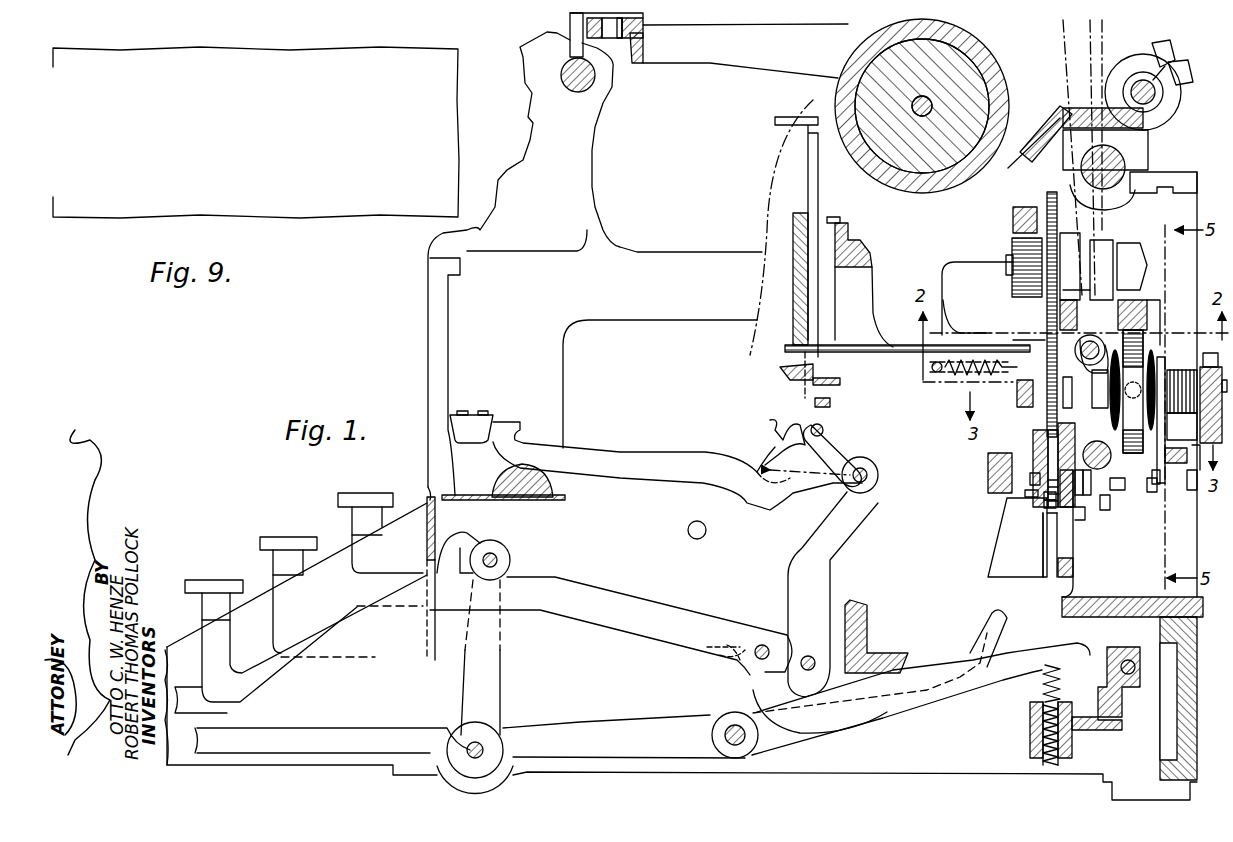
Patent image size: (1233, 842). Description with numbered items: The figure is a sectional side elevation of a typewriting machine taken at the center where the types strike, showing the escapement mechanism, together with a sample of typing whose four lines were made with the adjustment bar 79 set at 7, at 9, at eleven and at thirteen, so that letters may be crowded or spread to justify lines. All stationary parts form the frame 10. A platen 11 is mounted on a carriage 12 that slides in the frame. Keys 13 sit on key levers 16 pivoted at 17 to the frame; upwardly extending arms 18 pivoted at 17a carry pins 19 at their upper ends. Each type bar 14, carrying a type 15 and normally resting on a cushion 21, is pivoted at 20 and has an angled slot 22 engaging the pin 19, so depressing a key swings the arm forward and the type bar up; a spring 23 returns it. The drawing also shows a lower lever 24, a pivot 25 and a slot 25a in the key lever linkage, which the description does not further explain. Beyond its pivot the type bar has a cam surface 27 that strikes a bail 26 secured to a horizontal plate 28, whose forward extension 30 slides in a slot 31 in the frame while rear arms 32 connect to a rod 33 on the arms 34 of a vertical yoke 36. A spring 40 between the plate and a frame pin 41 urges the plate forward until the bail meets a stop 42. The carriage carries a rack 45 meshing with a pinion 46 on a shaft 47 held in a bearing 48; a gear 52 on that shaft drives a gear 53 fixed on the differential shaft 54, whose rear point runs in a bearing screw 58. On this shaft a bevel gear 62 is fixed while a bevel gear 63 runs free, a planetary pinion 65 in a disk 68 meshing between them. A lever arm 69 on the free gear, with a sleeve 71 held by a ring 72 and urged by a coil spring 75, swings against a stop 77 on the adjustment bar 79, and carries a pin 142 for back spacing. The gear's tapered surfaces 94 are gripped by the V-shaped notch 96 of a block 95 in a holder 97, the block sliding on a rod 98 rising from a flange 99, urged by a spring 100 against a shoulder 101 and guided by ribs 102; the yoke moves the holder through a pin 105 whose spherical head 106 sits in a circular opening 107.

In FIG. 9, the scale setting 7 is at (254, 86).
In FIG. 9, the scale setting 9 is at (211, 119).
In FIG. 1, the frame 10 is at (428, 292).
In FIG. 9, the platen 11 is at (182, 152).
In FIG. 1, the platen 11 is at (988, 60).
In FIG. 1, the carriage 12 is at (1058, 112).
In FIG. 9, the keys 13 is at (154, 185).
In FIG. 1, the keys 13 is at (234, 580).
In FIG. 1, the type bars 14 is at (622, 465).
In FIG. 1, the types 15 is at (473, 412).
In FIG. 1, the key levers 16 is at (622, 597).
In FIG. 1, the pivot 17 is at (1105, 655).
In FIG. 1, the pivot 17a is at (808, 655).
In FIG. 1, the arms 18 is at (845, 530).
In FIG. 1, the pin 19 is at (878, 478).
In FIG. 1, the pivot 20 is at (830, 428).
In FIG. 1, the cushion 21 is at (500, 480).
In FIG. 1, the slot 22 is at (850, 445).
In FIG. 1, the spring 23 is at (1040, 690).
In FIG. 1, the universal bar lever 24 is at (887, 712).
In FIG. 1, the pivot 25 is at (757, 643).
In FIG. 1, the slot 25a is at (745, 665).
In FIG. 1, the bail 26 is at (808, 403).
In FIG. 1, the cam surface 27 is at (770, 420).
In FIG. 1, the plate 28 is at (857, 342).
In FIG. 1, the extension 30 is at (768, 352).
In FIG. 1, the slot 31 is at (826, 322).
In FIG. 1, the arms 32 is at (1035, 360).
In FIG. 1, the rod 33 is at (1045, 345).
In FIG. 1, the arms 34 is at (1075, 410).
In FIG. 1, the yoke member 36 is at (1105, 468).
In FIG. 1, the spring 40 is at (960, 380).
In FIG. 1, the pin 41 is at (930, 367).
In FIG. 1, the stop 42 is at (778, 372).
In FIG. 1, the rack 45 is at (1048, 195).
In FIG. 1, the pinion 46 is at (1012, 248).
In FIG. 1, the shaft 47 is at (1008, 262).
In FIG. 1, the bearing 48 is at (1090, 250).
In FIG. 1, the gear 52 is at (1080, 178).
In FIG. 1, the gear 53 is at (1017, 400).
In FIG. 1, the shaft 54 is at (1063, 405).
In FIG. 1, the bearing screw 58 is at (1213, 388).
In FIG. 1, the bevel gear 62 is at (1090, 340).
In FIG. 1, the bevel gear 63 is at (1160, 350).
In FIG. 1, the planetary pinion gear 65 is at (1132, 391).
In FIG. 1, the disk 68 is at (1125, 335).
In FIG. 1, the lever arm 69 is at (1165, 485).
In FIG. 1, the sleeve 71 is at (1177, 444).
In FIG. 1, the ring 72 is at (1184, 426).
In FIG. 1, the coil spring 75 is at (1182, 373).
In FIG. 1, the stop 77 is at (1190, 490).
In FIG. 1, the adjustment bar 79 is at (1195, 470).
In FIG. 1, the surfaces 94 is at (1030, 445).
In FIG. 1, the block 95 is at (1030, 492).
In FIG. 1, the V-shaped notch 96 is at (1033, 460).
In FIG. 1, the holder 97 is at (1080, 495).
In FIG. 1, the rod 98 is at (1030, 480).
In FIG. 1, the flange 99 is at (1075, 520).
In FIG. 1, the spring 100 is at (1048, 495).
In FIG. 1, the shoulder 101 is at (1055, 505).
In FIG. 1, the vertical ribs 102 is at (1052, 580).
In FIG. 1, the pin 105 is at (1110, 490).
In FIG. 1, the head 106 is at (1105, 510).
In FIG. 1, the circular opening 107 is at (1085, 505).
In FIG. 1, the pin 142 is at (1160, 485).